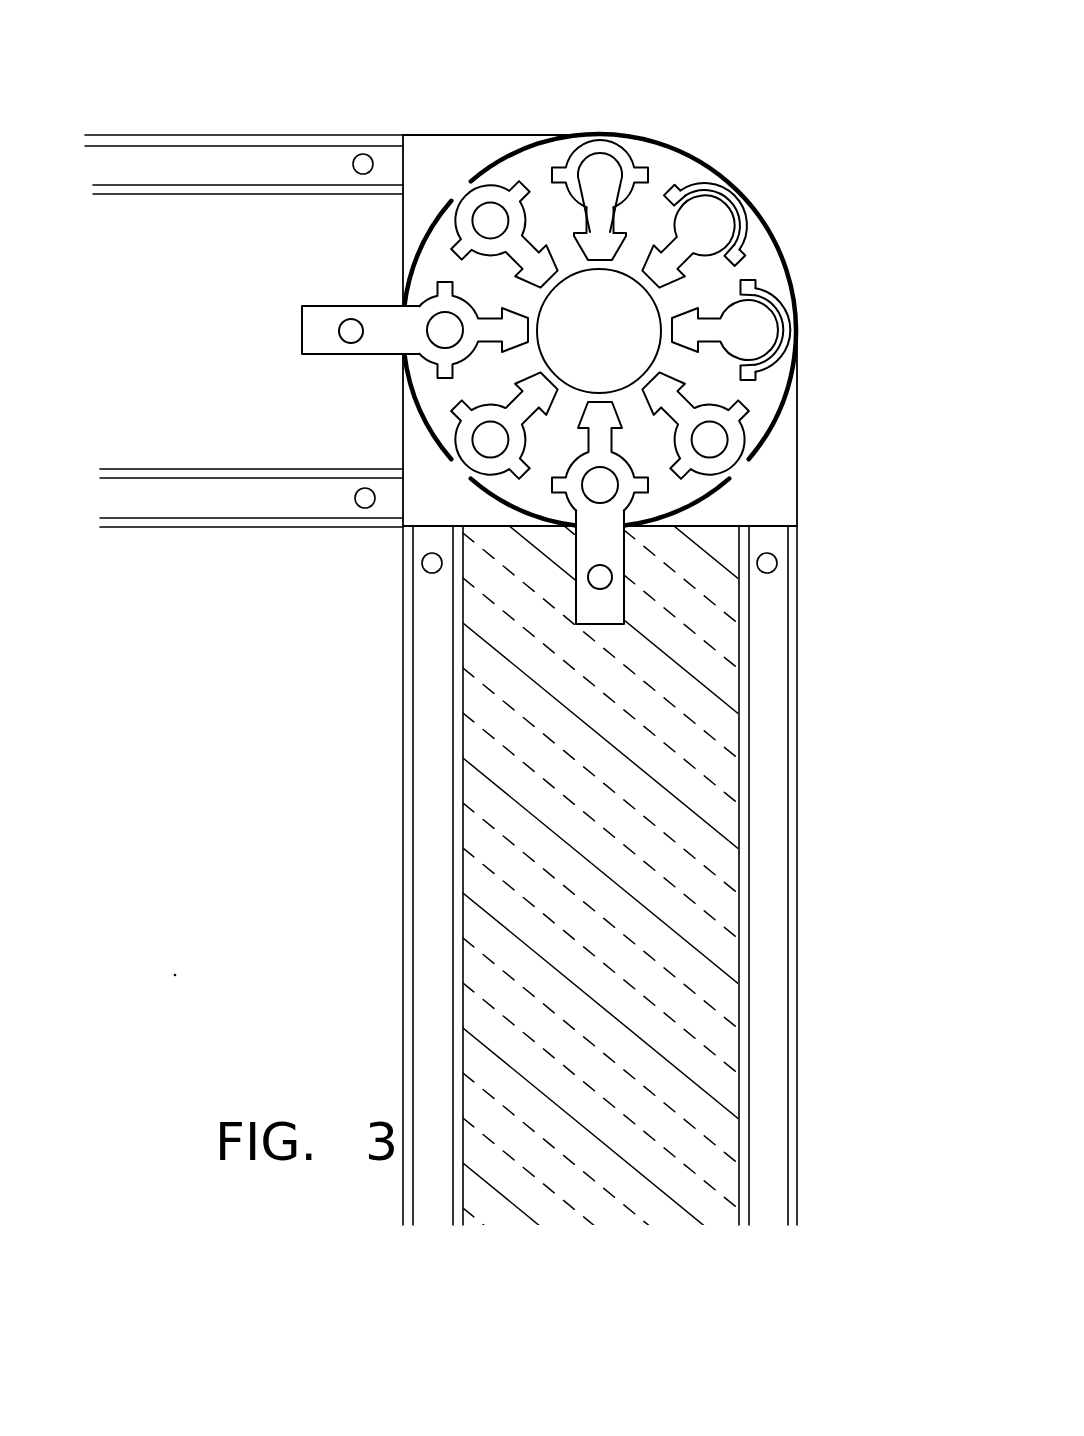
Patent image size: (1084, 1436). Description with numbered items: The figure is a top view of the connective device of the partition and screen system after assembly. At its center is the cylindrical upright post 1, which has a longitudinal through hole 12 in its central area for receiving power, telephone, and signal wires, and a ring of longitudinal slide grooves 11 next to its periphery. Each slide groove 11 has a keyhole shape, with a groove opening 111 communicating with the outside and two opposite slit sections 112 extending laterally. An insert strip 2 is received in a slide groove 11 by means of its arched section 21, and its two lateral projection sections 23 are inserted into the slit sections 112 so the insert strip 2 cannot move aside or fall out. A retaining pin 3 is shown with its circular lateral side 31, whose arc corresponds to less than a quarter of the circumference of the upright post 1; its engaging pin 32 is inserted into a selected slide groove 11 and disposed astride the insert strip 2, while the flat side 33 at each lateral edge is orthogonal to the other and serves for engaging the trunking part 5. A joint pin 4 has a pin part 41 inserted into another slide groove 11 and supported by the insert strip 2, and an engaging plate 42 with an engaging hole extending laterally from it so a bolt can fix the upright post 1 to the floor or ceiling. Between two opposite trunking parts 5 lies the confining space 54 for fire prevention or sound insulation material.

The upright post 1 is at (733, 168).
The insert strip 2 is at (790, 335).
The retaining pin 3 is at (780, 511).
The joint pin 4 is at (411, 303).
The trunking part 5 is at (322, 160).
The slide groove 11 is at (650, 145).
The longitudinal through hole 12 is at (598, 262).
The arched section 21 is at (783, 305).
The lateral projection section 23 is at (763, 302).
The circular lateral side 31 is at (745, 438).
The engaging pin 32 is at (782, 418).
The flat side 33 is at (778, 541).
The pin part 41 is at (572, 512).
The engaging plate 42 is at (608, 620).
The confining space 54 is at (720, 727).
The groove opening 111 is at (573, 292).
The slit section 112 is at (522, 186).